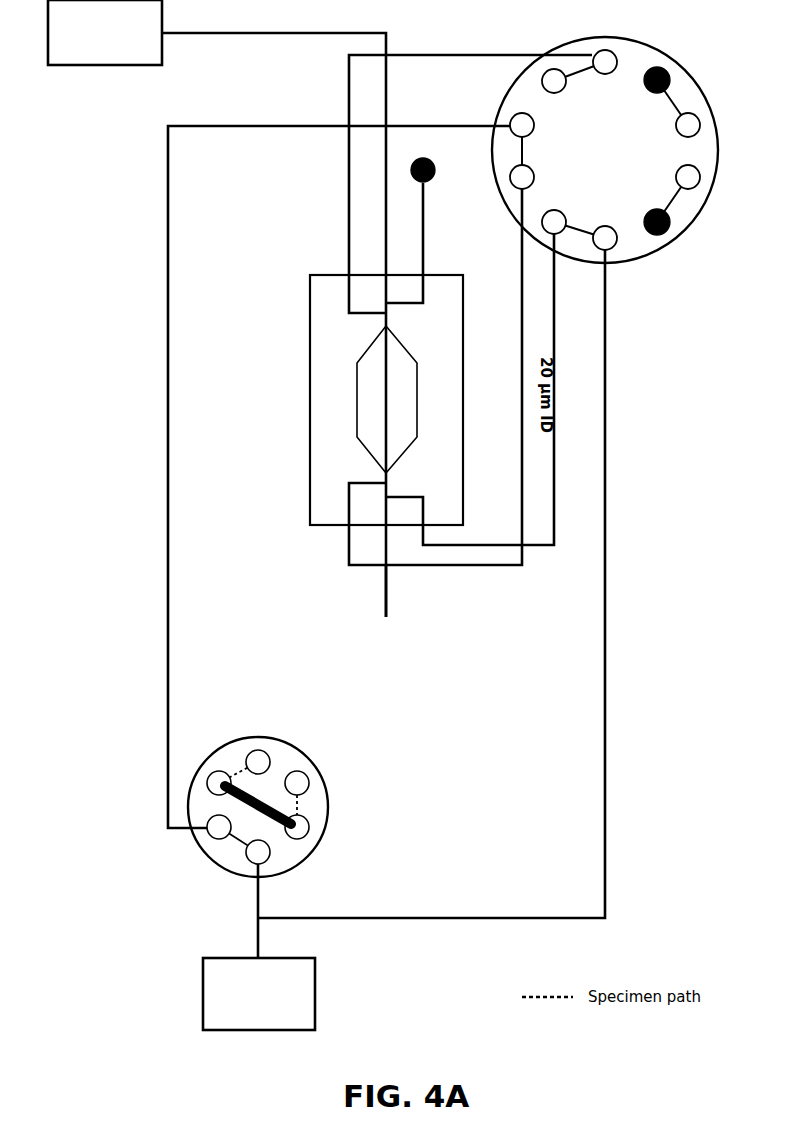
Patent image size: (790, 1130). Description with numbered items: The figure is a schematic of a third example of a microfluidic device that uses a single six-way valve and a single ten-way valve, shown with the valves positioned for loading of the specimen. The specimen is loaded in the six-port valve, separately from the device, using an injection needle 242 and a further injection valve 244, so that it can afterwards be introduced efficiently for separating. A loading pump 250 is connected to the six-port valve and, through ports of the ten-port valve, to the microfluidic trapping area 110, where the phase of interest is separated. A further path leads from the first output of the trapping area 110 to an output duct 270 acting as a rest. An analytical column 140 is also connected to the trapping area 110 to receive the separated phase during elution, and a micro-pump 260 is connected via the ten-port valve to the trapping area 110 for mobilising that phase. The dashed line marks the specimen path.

The micro-pump 260 is at (105, 32).
The output duct 270 is at (542, 80).
The microfluidic trapping area 110 is at (405, 400).
The analytical column 140 is at (385, 611).
The injection needle 242 is at (308, 767).
The injection valve 244 is at (253, 735).
The loading pump 250 is at (259, 994).